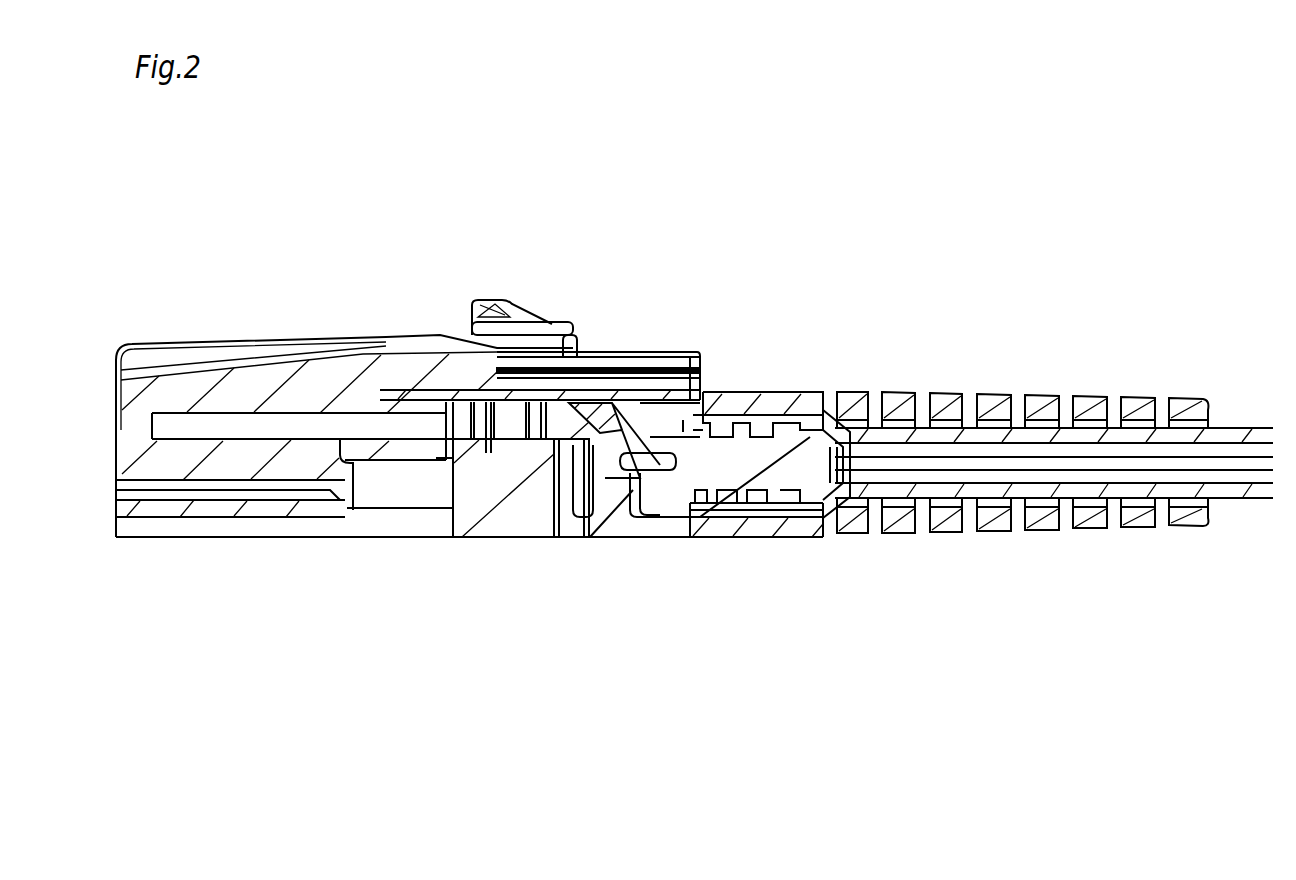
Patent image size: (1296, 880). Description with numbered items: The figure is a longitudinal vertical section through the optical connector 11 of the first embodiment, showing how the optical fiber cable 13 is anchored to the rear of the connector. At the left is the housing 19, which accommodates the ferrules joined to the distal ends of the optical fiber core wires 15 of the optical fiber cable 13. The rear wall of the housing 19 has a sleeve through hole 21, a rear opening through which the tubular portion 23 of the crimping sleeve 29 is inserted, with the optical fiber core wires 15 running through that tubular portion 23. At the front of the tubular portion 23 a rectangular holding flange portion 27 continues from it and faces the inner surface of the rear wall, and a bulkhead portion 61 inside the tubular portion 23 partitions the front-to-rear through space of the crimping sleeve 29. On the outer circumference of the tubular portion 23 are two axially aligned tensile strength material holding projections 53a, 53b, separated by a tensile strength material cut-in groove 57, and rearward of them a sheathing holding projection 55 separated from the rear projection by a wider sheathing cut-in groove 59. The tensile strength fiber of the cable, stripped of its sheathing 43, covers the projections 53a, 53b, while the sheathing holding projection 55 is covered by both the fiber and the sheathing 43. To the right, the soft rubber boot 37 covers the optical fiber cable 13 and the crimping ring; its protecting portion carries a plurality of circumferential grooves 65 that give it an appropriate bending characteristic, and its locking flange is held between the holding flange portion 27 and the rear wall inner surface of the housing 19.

The optical connector 11 is at (694, 411).
The optical fiber cable 13 is at (1054, 449).
The optical fiber core wires 15 is at (1005, 470).
The housing 19 is at (228, 345).
The sleeve through hole 21 is at (676, 416).
The tubular portion 23 is at (825, 488).
The holding flange portion 27 is at (666, 540).
The crimping sleeve 29 is at (628, 487).
The boot 37 is at (902, 389).
The sheathing 43 is at (1243, 498).
The tensile strength material holding projection 53a is at (716, 420).
The tensile strength material holding projection 53b is at (745, 421).
The sheathing holding projection 55 is at (791, 421).
The tensile strength material cut-in groove 57 is at (718, 537).
The sheathing cut-in groove 59 is at (758, 520).
The bulkhead portion 61 is at (795, 520).
The circumferential grooves 65 is at (975, 405).